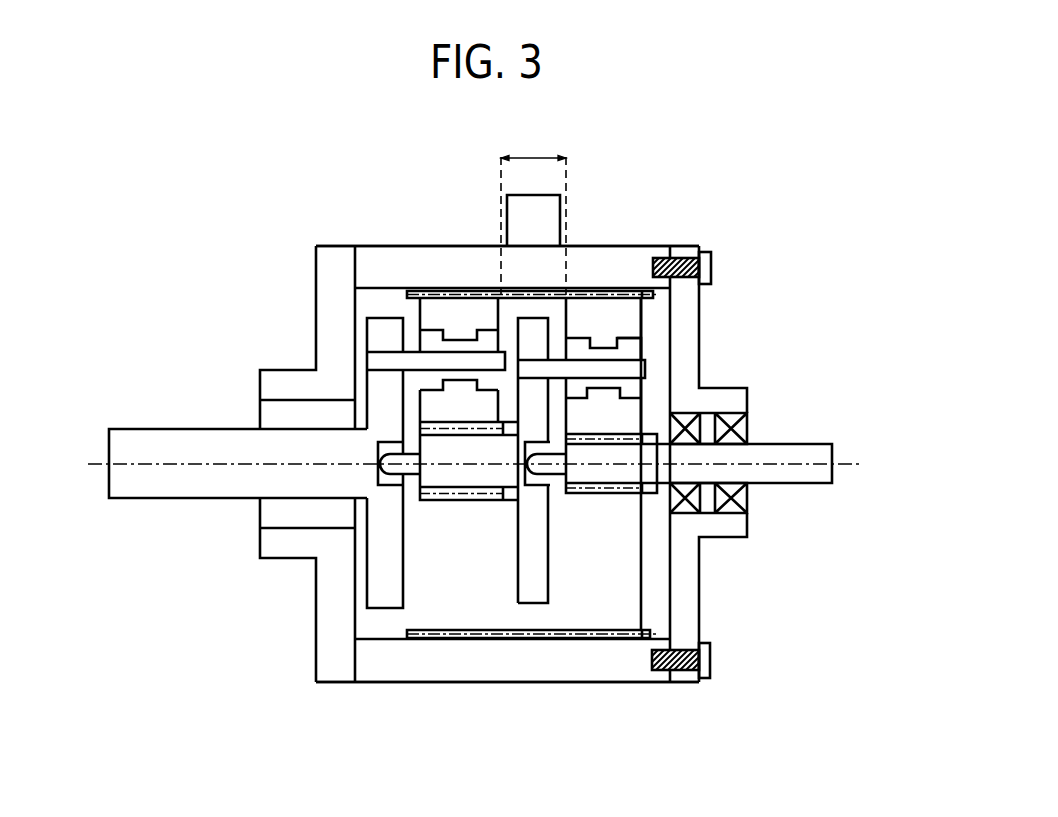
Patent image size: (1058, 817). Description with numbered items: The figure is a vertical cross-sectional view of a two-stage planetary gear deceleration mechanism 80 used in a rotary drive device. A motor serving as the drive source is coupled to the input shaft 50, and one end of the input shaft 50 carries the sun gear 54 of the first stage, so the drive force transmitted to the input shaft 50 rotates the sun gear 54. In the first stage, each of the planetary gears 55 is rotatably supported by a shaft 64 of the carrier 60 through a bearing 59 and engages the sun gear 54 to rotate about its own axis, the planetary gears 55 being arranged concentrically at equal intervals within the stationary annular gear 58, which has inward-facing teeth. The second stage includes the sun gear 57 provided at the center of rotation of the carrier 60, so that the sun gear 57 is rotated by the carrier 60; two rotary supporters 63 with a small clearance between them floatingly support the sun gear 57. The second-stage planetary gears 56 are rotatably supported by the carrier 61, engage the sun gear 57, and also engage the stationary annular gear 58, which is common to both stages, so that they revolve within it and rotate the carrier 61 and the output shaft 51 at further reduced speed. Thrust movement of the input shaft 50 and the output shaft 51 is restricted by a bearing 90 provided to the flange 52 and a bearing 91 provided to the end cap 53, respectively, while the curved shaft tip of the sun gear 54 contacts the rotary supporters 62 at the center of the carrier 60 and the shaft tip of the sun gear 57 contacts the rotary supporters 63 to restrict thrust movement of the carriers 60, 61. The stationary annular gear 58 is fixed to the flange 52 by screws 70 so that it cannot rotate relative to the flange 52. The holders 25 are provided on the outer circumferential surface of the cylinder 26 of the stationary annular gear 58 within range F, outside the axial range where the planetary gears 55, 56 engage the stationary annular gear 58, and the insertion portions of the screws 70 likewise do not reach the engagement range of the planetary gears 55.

The holder 25 is at (567, 207).
The cylinder 26 is at (393, 252).
The input shaft 50 is at (833, 450).
The output shaft 51 is at (140, 425).
The flange 52 is at (698, 595).
The end cap 53 is at (316, 280).
The sun gear 54 is at (637, 473).
The planetary gear 55 is at (642, 317).
The planetary gear 56 is at (458, 308).
The sun gear 57 is at (470, 482).
The stationary annular gear 58 is at (618, 243).
The bearing 59 is at (642, 348).
The carrier 60 is at (548, 562).
The carrier 61 is at (403, 562).
The rotary supporter 62 is at (537, 478).
The rotary supporter 63 is at (390, 478).
The shaft 64 is at (593, 365).
The screw 70 is at (712, 257).
The planetary gear deceleration mechanism 80 is at (460, 173).
The bearing 90 is at (750, 430).
The bearing 91 is at (257, 415).